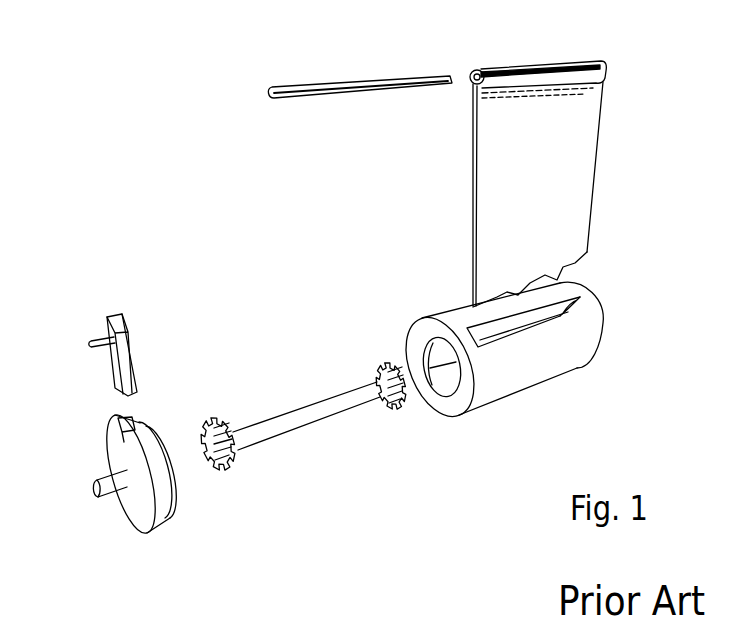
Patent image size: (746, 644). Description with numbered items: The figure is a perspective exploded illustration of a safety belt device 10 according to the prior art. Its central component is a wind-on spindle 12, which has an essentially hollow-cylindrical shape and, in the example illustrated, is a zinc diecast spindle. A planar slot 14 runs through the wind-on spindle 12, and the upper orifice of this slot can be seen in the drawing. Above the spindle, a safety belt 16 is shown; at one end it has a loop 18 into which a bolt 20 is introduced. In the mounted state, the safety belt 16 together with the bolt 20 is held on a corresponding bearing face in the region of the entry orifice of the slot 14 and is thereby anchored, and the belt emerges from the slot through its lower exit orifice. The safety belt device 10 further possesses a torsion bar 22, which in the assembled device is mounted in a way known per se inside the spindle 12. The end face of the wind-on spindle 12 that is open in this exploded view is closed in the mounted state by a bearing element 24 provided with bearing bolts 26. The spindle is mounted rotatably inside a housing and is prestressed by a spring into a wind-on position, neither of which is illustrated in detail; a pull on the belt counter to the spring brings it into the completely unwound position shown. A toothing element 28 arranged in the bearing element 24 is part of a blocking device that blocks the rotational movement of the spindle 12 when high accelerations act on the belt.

The safety belt device 10 is at (161, 109).
The wind-on spindle 12 is at (548, 367).
The planar slot 14 is at (576, 294).
The safety belt 16 is at (572, 191).
The loop 18 is at (585, 61).
The bolt 20 is at (378, 82).
The torsion bar 22 is at (308, 415).
The bearing element 24 is at (135, 510).
The bearing bolts 26 is at (100, 481).
The toothing element 28 is at (125, 343).